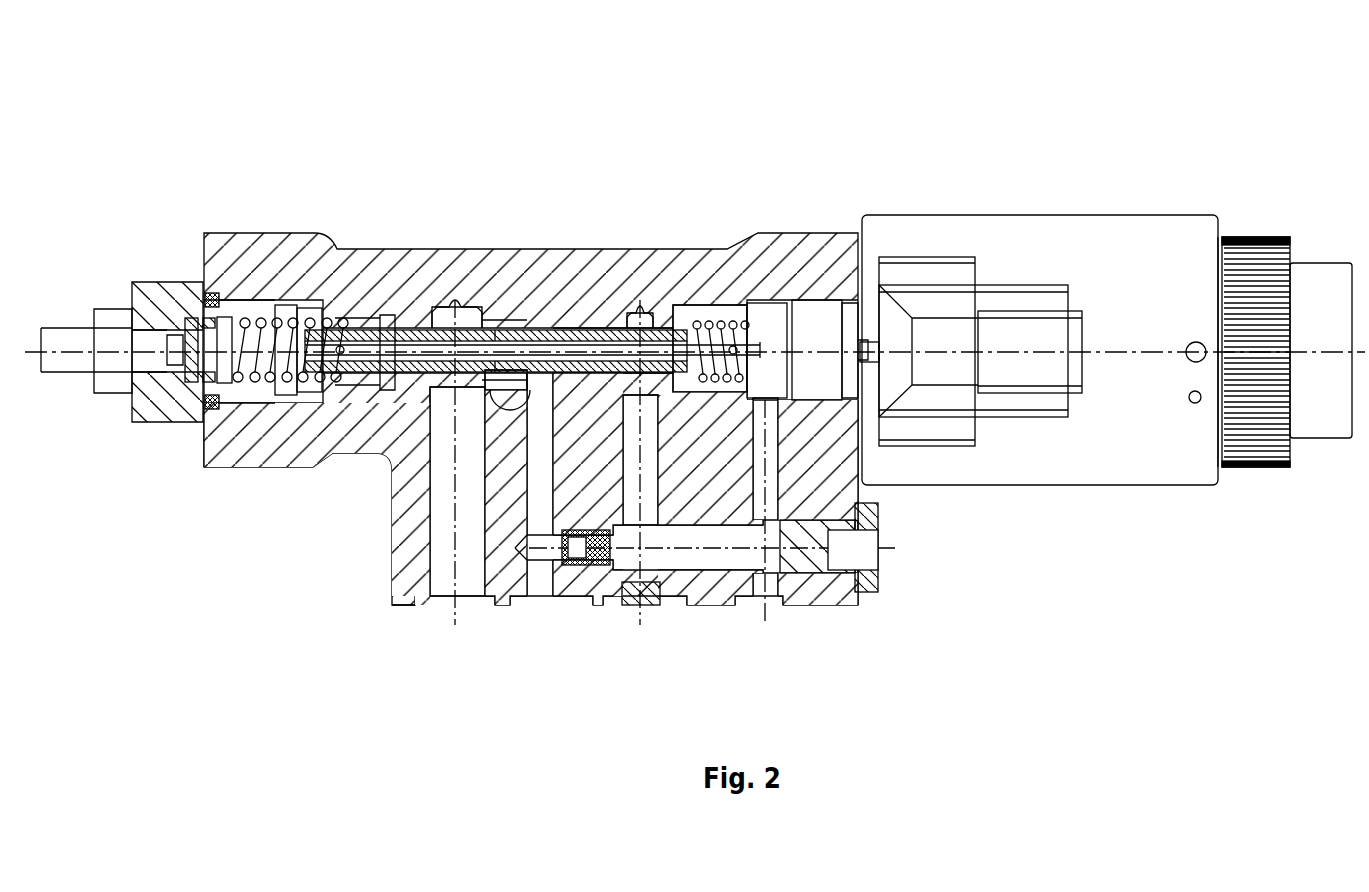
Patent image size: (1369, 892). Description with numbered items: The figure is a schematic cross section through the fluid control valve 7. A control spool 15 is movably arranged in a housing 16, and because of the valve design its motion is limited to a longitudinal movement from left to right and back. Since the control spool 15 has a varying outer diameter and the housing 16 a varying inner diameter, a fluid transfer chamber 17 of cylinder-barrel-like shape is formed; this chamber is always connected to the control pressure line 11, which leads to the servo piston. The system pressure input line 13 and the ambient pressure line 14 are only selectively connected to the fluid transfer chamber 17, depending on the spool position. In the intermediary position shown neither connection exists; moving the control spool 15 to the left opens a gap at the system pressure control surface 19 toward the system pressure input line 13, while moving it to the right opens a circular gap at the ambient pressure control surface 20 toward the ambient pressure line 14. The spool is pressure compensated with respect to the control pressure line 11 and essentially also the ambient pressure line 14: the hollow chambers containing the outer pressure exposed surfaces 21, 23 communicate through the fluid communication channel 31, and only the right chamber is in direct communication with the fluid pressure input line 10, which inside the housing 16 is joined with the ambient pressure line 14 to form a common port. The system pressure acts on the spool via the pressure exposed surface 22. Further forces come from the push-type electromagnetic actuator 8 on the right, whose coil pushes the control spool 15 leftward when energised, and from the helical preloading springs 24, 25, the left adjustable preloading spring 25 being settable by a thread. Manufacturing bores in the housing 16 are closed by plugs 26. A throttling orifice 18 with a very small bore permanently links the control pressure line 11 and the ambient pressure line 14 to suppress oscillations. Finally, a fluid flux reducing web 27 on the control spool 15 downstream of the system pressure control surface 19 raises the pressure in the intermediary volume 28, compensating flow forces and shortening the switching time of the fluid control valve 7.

The fluid control valve 7 is at (1276, 192).
The electromagnetic actuator 8 is at (1046, 215).
The fluid pressure input line 10 is at (760, 590).
The control pressure line 11 is at (536, 585).
The system pressure input line 13 is at (442, 577).
The ambient pressure line 14 is at (648, 512).
The control spool 15 is at (571, 326).
The housing 16 is at (267, 452).
The fluid transfer chamber 17 is at (620, 333).
The throttling orifice 18 is at (583, 567).
The system pressure control surface 19 is at (487, 325).
The ambient pressure control surface 20 is at (640, 300).
The outer pressure exposed surface 21 is at (735, 345).
The pressure exposed surface 22 is at (450, 305).
The outer pressure exposed surface 23 is at (215, 297).
The preloading spring 24 is at (767, 395).
The adjustable preloading spring 25 is at (337, 305).
The plugs 26 is at (663, 605).
The fluid flux reducing web 27 is at (495, 330).
The intermediary volume 28 is at (538, 340).
The fluid communication channel 31 is at (400, 340).